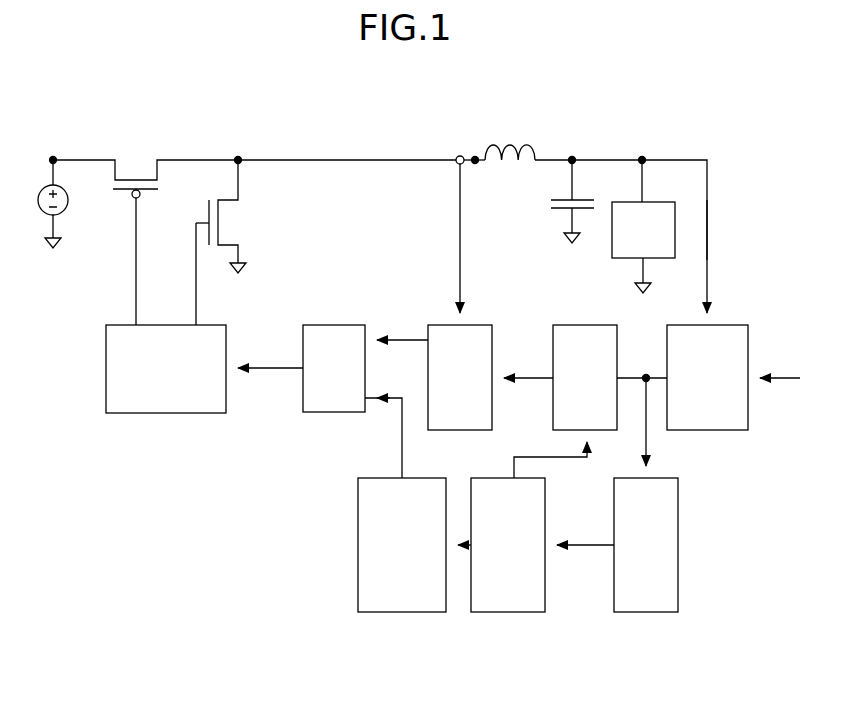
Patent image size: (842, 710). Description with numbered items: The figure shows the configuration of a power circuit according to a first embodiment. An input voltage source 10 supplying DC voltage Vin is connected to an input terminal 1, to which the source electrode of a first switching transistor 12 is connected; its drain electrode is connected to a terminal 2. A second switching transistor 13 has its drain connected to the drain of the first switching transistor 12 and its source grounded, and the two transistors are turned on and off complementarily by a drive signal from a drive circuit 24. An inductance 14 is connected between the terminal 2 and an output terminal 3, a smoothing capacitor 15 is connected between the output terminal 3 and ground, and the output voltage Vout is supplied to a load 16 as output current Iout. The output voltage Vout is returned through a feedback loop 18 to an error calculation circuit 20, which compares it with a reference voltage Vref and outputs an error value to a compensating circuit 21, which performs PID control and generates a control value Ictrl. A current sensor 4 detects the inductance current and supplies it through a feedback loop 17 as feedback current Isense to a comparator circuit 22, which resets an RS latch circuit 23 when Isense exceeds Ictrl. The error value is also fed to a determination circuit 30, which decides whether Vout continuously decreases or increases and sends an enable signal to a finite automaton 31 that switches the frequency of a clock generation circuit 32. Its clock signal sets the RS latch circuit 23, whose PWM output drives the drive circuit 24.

The input terminal 1 is at (57, 156).
The terminal 2 is at (472, 156).
The output terminal 3 is at (646, 156).
The current sensor 4 is at (456, 165).
The input voltage source 10 is at (68, 203).
The first switching transistor 12 is at (136, 165).
The second switching transistor 13 is at (233, 223).
The inductance 14 is at (513, 145).
The smoothing capacitor 15 is at (548, 205).
The load 16 is at (655, 202).
The feedback loop 17 is at (458, 247).
The feedback loop 18 is at (709, 228).
The error calculation circuit 20 is at (729, 325).
The compensating circuit 21 is at (584, 325).
The comparator circuit 22 is at (480, 325).
The RS latch circuit 23 is at (329, 325).
The drive circuit 24 is at (166, 413).
The determination circuit 30 is at (649, 612).
The finite automaton 31 is at (503, 612).
The clock generation circuit 32 is at (394, 612).